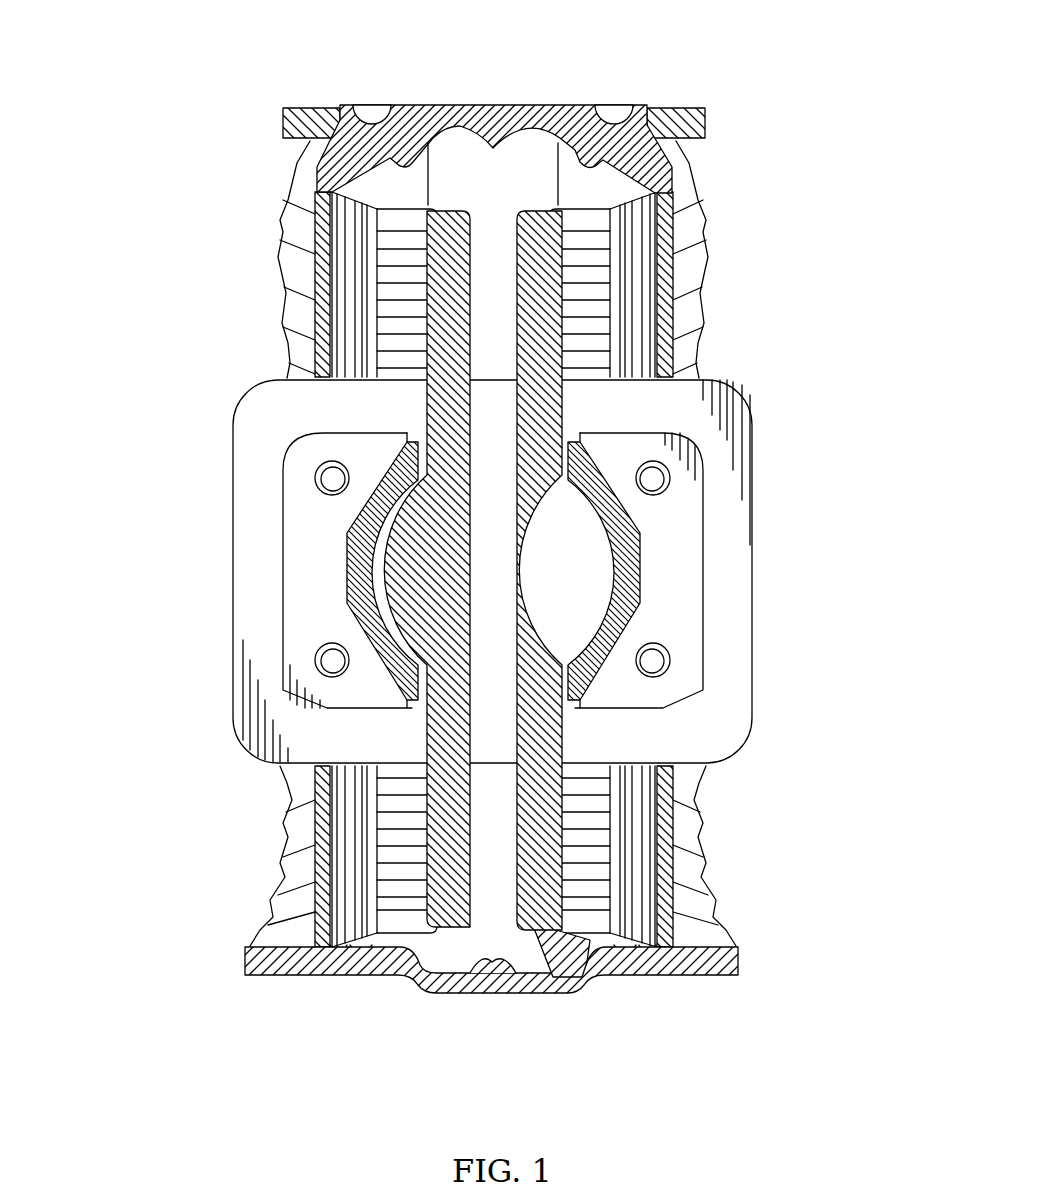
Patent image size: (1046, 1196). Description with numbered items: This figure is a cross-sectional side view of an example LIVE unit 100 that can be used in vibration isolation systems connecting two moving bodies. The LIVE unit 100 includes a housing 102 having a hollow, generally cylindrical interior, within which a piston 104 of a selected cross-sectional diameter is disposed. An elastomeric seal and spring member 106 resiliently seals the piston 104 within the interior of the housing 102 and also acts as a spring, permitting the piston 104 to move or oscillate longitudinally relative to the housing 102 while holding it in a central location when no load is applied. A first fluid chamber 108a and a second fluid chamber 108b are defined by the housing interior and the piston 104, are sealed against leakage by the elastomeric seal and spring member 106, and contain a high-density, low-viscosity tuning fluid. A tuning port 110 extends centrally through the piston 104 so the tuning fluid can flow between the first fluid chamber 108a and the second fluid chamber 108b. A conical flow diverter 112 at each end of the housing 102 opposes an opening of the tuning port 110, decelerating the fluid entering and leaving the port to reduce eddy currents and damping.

The LIVE unit 100 is at (197, 67).
The housing 102 is at (677, 967).
The piston 104 is at (452, 223).
The elastomeric seal and spring member 106 is at (343, 277).
The first fluid chamber 108a is at (417, 163).
The second fluid chamber 108b is at (445, 960).
The tuning port 110 is at (492, 244).
The conical flow diverter 112 is at (453, 140).